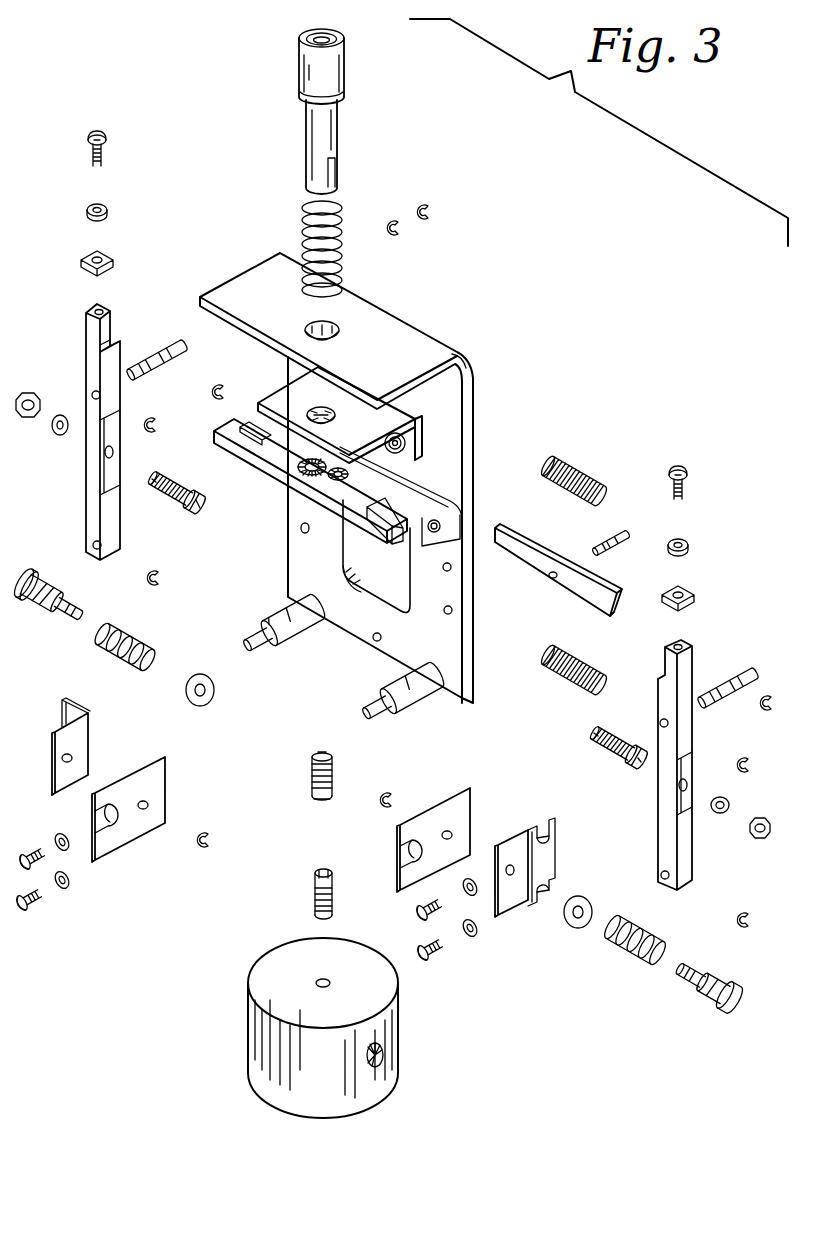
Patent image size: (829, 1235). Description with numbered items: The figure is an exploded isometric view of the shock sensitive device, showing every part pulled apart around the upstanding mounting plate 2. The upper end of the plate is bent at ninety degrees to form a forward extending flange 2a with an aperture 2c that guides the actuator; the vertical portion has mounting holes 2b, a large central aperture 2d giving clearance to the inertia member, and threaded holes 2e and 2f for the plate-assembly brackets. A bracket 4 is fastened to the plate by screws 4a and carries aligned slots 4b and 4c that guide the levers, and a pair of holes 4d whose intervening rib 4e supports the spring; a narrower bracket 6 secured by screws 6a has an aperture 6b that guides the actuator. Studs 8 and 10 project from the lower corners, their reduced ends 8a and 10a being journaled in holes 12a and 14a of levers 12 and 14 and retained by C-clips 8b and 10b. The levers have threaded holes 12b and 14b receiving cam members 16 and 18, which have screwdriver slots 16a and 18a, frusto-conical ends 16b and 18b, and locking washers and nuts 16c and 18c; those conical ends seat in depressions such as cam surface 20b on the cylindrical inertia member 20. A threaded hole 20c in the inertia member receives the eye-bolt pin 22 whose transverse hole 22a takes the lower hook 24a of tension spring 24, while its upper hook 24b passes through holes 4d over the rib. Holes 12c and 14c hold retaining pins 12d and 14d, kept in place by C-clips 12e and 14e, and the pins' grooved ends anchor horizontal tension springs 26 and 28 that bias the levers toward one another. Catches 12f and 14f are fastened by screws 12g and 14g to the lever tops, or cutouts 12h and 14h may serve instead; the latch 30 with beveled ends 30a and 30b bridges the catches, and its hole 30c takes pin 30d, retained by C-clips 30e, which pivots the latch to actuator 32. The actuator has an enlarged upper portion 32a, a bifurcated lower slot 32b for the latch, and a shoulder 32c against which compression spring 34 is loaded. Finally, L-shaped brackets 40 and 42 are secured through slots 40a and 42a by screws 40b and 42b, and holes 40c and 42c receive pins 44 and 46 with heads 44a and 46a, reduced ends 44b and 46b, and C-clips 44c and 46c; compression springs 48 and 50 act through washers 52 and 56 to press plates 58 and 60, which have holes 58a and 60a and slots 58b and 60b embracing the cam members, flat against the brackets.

The mounting plate 2 is at (356, 477).
The flange 2a is at (242, 293).
The holes 2b is at (474, 389).
The aperture 2c is at (337, 333).
The aperture 2d is at (370, 597).
The threaded holes 2e is at (300, 528).
The threaded holes 2f is at (447, 606).
The bracket 4 is at (327, 483).
The screws 4a is at (434, 532).
The slot 4b is at (240, 424).
The slot 4c is at (390, 508).
The holes 4d is at (345, 474).
The rib 4e is at (309, 470).
The bracket 6 is at (355, 415).
The screws 6a is at (399, 444).
The aperture 6b is at (321, 410).
The stud 8 is at (274, 621).
The reduced forward end portion 8a is at (258, 630).
The C-clip 8b is at (160, 573).
The stud 10 is at (387, 693).
The reduced forward end portion 10a is at (374, 710).
The C-clip 10b is at (749, 913).
The lever 12 is at (96, 431).
The hole 12a is at (94, 542).
The threaded hole 12b is at (105, 452).
The hole 12c is at (92, 393).
The retaining pin 12d is at (159, 356).
The C-clips 12e is at (195, 396).
The catch 12f is at (104, 256).
The screw 12g is at (100, 145).
The cutout portion 12h is at (108, 341).
The lever 14 is at (651, 765).
The hole 14a is at (661, 876).
The threaded hole 14b is at (679, 784).
The hole 14c is at (660, 722).
The retaining pin 14d is at (728, 676).
The C-clips 14e is at (768, 730).
The catch 14f is at (694, 596).
The screw 14g is at (681, 482).
The cutout portion 14h is at (663, 673).
The cam member 16 is at (181, 489).
The screwdriver-receiving slot 16a is at (157, 479).
The frusto-conical end portion 16b is at (196, 504).
The locking washer and nut 16c is at (52, 428).
The cam member 18 is at (601, 745).
The screwdriver-receiving slot 18a is at (640, 763).
The frusto-conical end portion 18b is at (595, 735).
The locking washer and nut 18c is at (760, 818).
The inertia member 20 is at (334, 1025).
The cam surface 20b is at (392, 1056).
The threaded hole 20c is at (331, 983).
The spring-securing pin 22 is at (321, 886).
The transverse hole 22a is at (330, 877).
The helical tension spring 24 is at (303, 774).
The lower end hook 24a is at (322, 799).
The upper end hook 24b is at (322, 753).
The helical tension spring 26 is at (565, 688).
The helical tension spring 28 is at (582, 474).
The latch 30 is at (568, 579).
The latch end 30a is at (496, 536).
The latch end 30b is at (614, 616).
The hole 30c is at (550, 578).
The pin 30d is at (612, 546).
The C-clips 30e is at (402, 229).
The actuator 32 is at (326, 102).
The enlarged upper portion 32a is at (340, 70).
The slot 32b is at (333, 165).
The annular shoulder 32c is at (304, 91).
The helical compression spring 34 is at (303, 217).
The mounting bracket 40 is at (64, 736).
The slots 40a is at (74, 706).
The screws 40b is at (68, 852).
The hole 40c is at (61, 758).
The mounting bracket 42 is at (529, 868).
The slots 42a is at (545, 838).
The screws 42b is at (470, 897).
The hole 42c is at (506, 870).
The retaining pin 44 is at (47, 598).
The enlarged head 44a is at (28, 582).
The reduced end portion 44b is at (64, 617).
The C-clip 44c is at (212, 840).
The retaining pin 46 is at (720, 982).
The enlarged head 46a is at (746, 999).
The reduced end portion 46b is at (686, 978).
The C-clip 46c is at (388, 793).
The helical compression spring 48 is at (138, 640).
The helical compression spring 50 is at (623, 951).
The washer 52 is at (214, 690).
The washer 56 is at (572, 924).
The plate 58 is at (126, 809).
The hole 58a is at (148, 806).
The slot 58b is at (96, 830).
The plate 60 is at (434, 828).
The hole 60a is at (453, 834).
The slot 60b is at (402, 858).